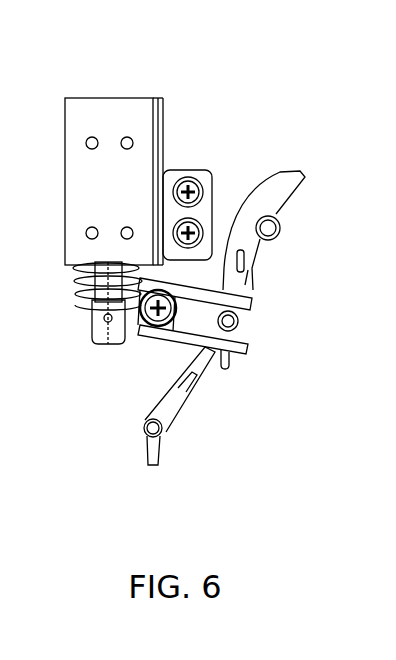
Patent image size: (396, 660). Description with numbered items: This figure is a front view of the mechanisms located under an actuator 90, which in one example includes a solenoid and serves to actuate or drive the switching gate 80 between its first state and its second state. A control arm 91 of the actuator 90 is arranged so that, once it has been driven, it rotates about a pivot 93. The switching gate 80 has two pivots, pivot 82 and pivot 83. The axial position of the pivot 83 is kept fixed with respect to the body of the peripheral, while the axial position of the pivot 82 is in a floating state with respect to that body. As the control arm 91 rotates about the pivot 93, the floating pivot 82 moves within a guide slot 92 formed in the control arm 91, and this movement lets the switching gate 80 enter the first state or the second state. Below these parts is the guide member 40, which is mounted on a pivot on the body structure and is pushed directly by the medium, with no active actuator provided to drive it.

The actuator 90 is at (128, 96).
The pivot 93 is at (142, 326).
The control arm 91 is at (253, 301).
The pivot 82 is at (239, 322).
The guide slot 92 is at (184, 336).
The switching gate 80 is at (271, 177).
The pivot 83 is at (281, 231).
The guide member 40 is at (149, 410).